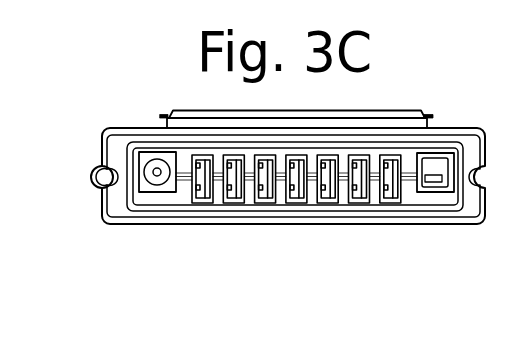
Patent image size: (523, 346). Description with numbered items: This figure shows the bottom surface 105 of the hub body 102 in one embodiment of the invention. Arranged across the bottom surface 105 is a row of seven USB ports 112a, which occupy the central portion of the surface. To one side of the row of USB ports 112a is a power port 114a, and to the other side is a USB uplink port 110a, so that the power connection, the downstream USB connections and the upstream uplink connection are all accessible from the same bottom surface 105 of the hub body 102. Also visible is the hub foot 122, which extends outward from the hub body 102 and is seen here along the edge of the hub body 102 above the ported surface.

The hub body 102 is at (117, 127).
The bottom surface 105 is at (108, 152).
The hub foot 122 is at (407, 120).
The power port 114a is at (145, 193).
The USB ports 112a is at (391, 183).
The USB uplink port 110a is at (433, 188).